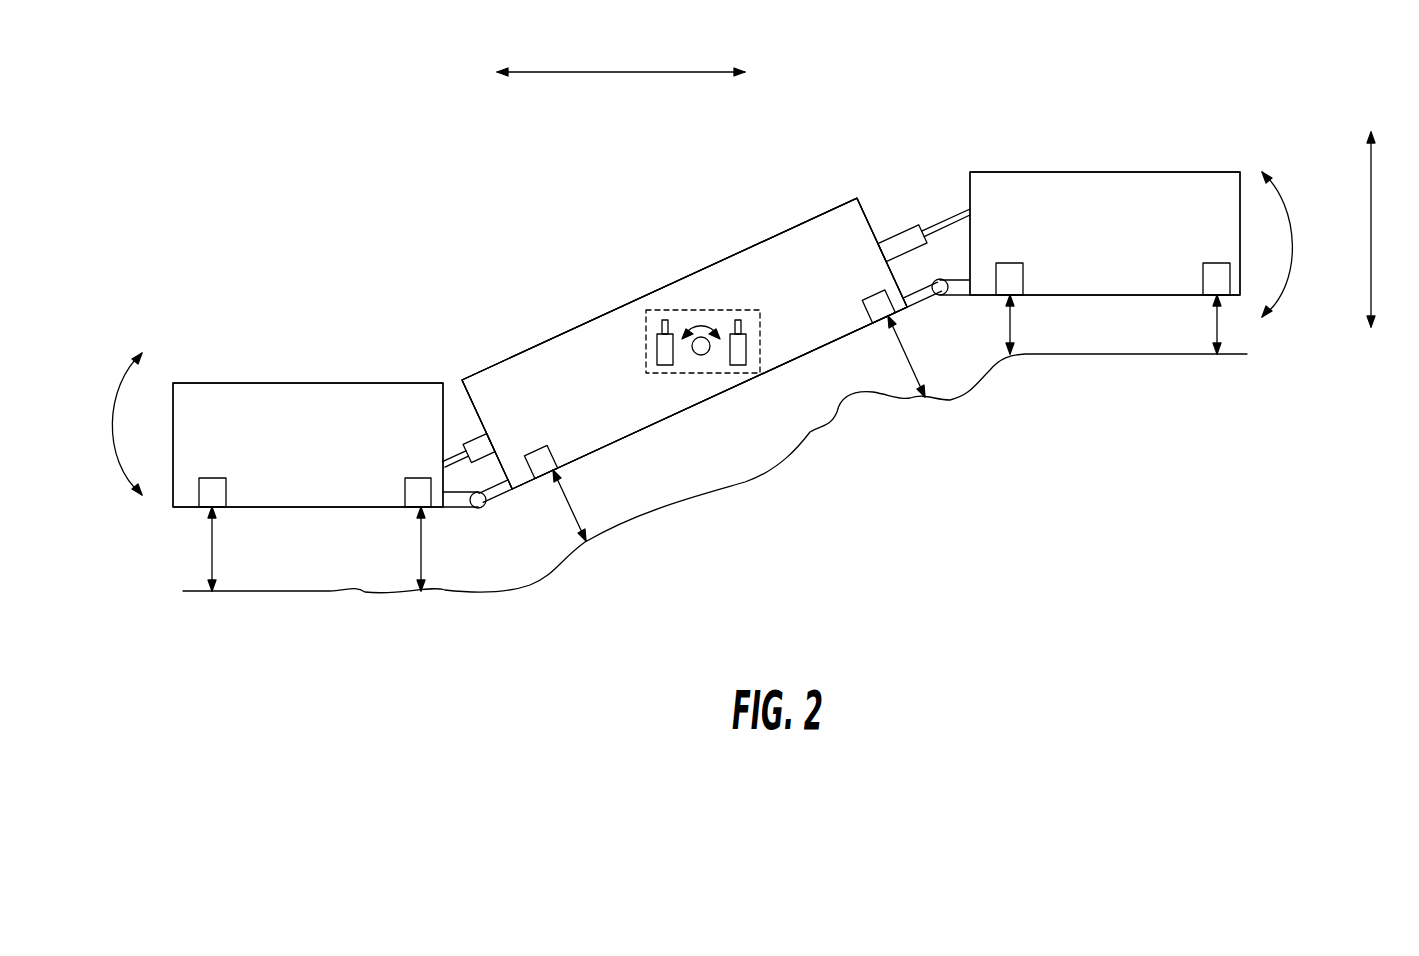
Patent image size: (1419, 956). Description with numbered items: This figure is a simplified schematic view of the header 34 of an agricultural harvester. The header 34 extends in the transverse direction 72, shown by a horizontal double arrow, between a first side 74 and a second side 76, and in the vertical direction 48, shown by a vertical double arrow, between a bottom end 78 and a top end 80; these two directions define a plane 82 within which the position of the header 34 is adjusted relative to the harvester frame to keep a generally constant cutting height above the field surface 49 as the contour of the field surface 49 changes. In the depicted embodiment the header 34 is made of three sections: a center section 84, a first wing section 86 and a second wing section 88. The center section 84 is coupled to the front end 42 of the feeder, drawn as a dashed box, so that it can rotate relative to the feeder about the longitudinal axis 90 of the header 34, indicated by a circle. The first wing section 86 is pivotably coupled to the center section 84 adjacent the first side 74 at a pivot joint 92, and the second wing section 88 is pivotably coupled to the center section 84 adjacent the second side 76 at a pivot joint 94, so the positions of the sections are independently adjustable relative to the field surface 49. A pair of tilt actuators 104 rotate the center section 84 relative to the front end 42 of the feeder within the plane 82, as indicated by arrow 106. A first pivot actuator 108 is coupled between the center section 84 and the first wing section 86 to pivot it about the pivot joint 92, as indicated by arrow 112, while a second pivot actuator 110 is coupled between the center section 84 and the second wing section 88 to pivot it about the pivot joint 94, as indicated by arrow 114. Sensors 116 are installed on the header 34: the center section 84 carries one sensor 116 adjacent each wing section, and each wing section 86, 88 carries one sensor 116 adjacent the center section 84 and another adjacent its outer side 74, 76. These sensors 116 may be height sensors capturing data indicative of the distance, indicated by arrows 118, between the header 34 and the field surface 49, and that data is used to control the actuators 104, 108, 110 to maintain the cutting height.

The header 34 is at (183, 150).
The front end of the feeder 42 is at (688, 309).
The vertical direction 48 is at (1372, 222).
The field surface 49 is at (320, 590).
The transverse direction 72 is at (625, 72).
The first side 74 is at (207, 352).
The second side 76 is at (1241, 153).
The bottom end 78 is at (661, 439).
The top end 80 is at (508, 280).
The plane 82 is at (317, 244).
The center section 84 is at (810, 220).
The first wing section 86 is at (330, 383).
The second wing section 88 is at (1115, 172).
The longitudinal axis 90 is at (700, 356).
The pivot joint 92 is at (480, 509).
The pivot joint 94 is at (940, 296).
The tilt actuators 104 is at (656, 349).
The arrow 106 is at (706, 325).
The first pivot actuator 108 is at (470, 437).
The second pivot actuator 110 is at (905, 243).
The arrow 112 is at (104, 425).
The arrow 114 is at (1300, 244).
The sensors 116 is at (215, 478).
The arrows 118 is at (210, 556).